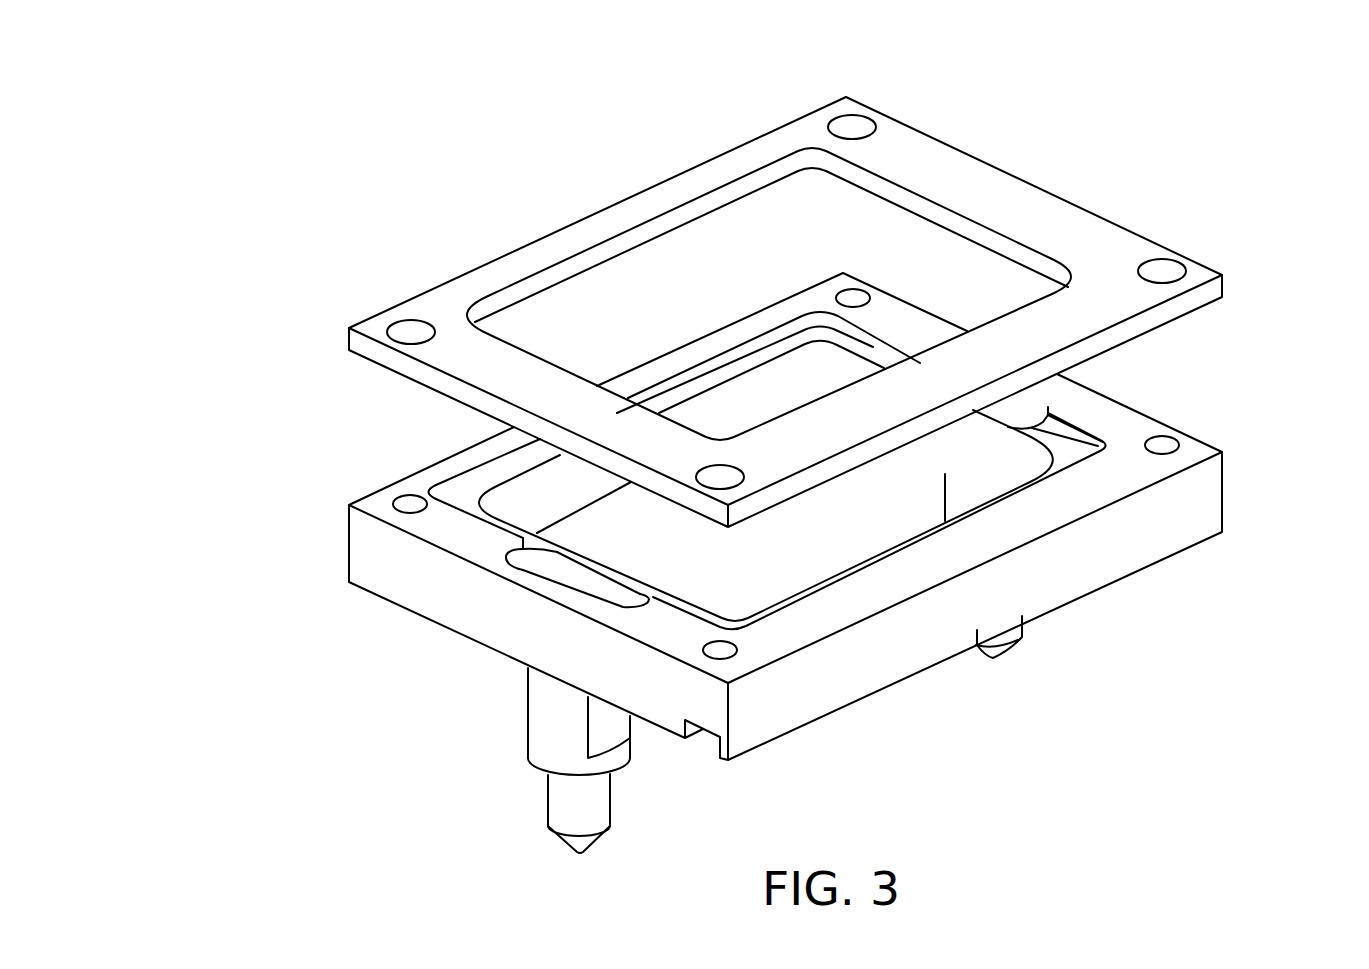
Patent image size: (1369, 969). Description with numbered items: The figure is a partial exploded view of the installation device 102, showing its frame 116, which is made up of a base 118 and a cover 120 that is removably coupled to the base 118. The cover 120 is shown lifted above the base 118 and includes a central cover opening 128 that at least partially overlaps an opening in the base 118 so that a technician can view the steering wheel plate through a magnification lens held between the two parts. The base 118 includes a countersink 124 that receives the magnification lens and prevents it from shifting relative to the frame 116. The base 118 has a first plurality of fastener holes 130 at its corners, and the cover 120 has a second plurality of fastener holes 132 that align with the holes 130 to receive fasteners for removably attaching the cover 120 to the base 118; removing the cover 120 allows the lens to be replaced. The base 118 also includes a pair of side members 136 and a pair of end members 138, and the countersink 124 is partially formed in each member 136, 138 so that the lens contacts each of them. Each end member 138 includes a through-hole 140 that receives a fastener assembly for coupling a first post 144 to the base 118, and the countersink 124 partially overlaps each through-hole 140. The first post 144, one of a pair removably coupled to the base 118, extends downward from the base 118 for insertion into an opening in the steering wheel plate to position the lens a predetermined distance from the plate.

The installation device 102 is at (683, 120).
The frame 116 is at (247, 460).
The base 118 is at (445, 462).
The cover 120 is at (465, 365).
The countersink 124 is at (1103, 437).
The central cover opening 128 is at (977, 223).
The first plurality of fastener holes 130 is at (403, 512).
The second plurality of fastener holes 132 is at (1167, 270).
The side members 136 is at (877, 652).
The end members 138 is at (542, 623).
The through-hole 140 is at (523, 571).
The first post 144 is at (567, 818).